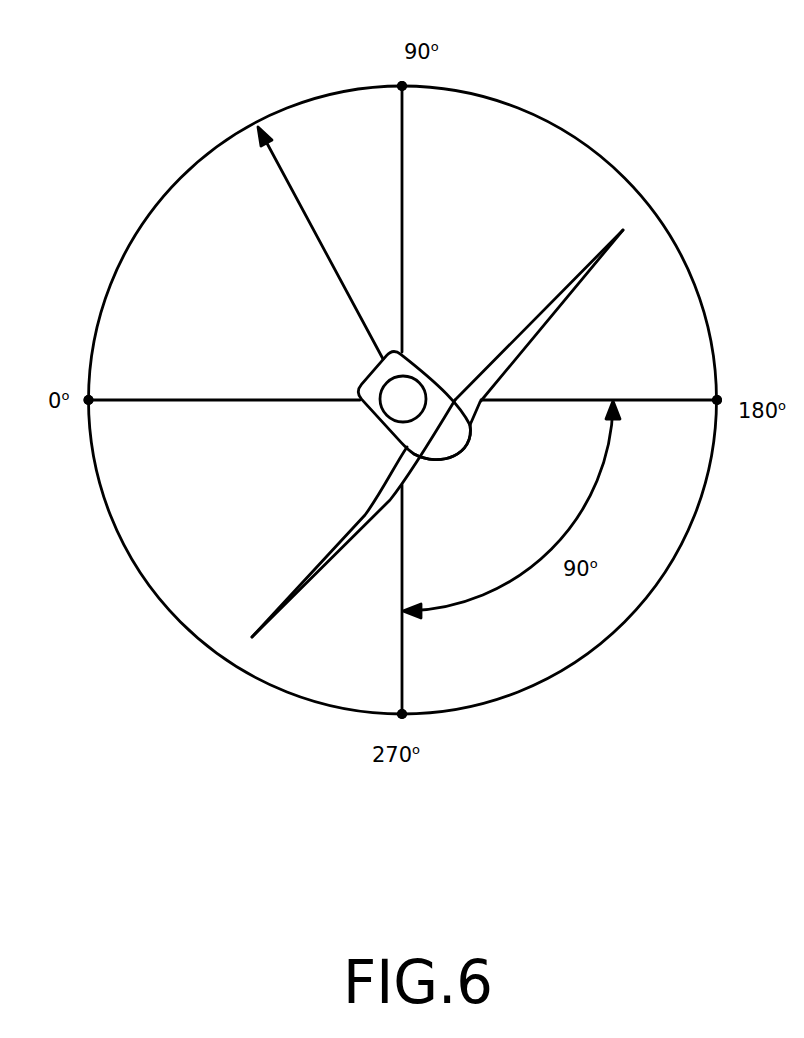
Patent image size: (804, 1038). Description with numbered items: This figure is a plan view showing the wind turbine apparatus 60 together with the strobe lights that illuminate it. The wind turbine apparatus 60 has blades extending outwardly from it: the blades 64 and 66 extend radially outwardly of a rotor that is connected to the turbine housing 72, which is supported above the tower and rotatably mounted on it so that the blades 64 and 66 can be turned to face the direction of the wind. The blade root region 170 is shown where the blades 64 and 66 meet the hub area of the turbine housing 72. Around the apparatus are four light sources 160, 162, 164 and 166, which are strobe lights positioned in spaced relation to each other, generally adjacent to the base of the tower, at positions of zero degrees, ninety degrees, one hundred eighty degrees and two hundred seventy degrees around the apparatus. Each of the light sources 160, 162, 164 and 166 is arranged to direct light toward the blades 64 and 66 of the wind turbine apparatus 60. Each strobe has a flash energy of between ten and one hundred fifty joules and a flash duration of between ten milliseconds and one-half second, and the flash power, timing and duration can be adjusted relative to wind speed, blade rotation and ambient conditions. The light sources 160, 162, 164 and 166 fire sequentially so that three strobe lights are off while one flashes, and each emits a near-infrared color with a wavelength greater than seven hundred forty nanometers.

The wind turbine apparatus 60 is at (437, 433).
The blade 64 is at (335, 555).
The blade 66 is at (555, 316).
The turbine housing 72 is at (435, 400).
The blade root 170 is at (455, 446).
The light source 160 is at (88, 400).
The light source 162 is at (402, 86).
The light source 164 is at (717, 400).
The light source 166 is at (402, 714).